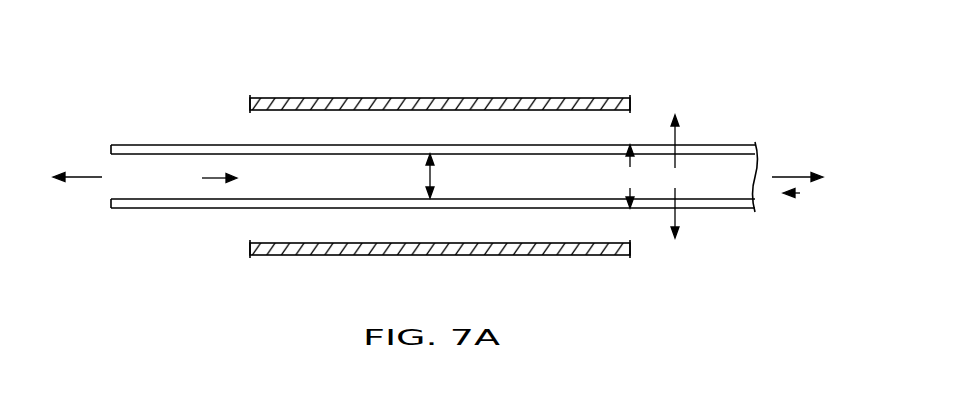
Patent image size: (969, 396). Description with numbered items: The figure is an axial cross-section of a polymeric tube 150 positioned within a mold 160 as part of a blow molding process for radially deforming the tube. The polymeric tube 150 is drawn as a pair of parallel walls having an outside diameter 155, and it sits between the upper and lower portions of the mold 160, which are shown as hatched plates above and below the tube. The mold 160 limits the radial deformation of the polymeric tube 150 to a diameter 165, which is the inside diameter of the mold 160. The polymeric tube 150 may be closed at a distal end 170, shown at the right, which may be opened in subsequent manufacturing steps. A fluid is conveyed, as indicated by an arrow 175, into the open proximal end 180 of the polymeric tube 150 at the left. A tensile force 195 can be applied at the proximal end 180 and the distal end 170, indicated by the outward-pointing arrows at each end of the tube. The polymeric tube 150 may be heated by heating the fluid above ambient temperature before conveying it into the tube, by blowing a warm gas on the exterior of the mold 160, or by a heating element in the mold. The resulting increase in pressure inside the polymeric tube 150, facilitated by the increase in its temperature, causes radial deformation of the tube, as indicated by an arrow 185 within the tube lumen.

The polymeric tube 150 is at (310, 146).
The outside diameter 155 is at (631, 176).
The mold 160 is at (602, 100).
The diameter 165 is at (676, 176).
The distal end 170 is at (798, 193).
The arrow 175 is at (215, 178).
The proximal end 180 is at (123, 183).
The arrow 185 is at (433, 182).
The tensile force 195 is at (90, 177).